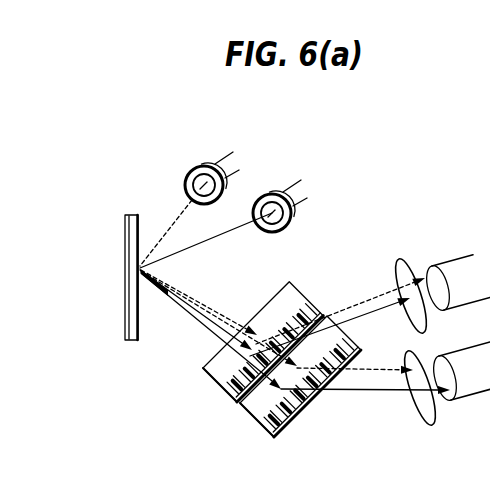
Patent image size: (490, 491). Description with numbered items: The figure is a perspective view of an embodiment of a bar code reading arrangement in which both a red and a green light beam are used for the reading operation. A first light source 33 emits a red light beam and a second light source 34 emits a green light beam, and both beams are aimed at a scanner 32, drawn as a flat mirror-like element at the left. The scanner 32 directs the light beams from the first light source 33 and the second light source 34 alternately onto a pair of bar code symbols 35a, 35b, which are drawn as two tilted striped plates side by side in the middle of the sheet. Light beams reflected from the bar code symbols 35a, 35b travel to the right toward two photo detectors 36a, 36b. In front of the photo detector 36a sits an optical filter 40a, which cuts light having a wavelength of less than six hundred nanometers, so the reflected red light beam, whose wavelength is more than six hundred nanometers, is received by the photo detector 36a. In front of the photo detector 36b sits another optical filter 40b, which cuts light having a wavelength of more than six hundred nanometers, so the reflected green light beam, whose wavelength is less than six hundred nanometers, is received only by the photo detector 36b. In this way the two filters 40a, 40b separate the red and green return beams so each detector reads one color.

The scanner 32 is at (123, 247).
The first light source 33 is at (232, 162).
The second light source 34 is at (303, 183).
The bar code symbol 35a is at (297, 289).
The bar code symbol 35b is at (255, 422).
The optical filter 40a is at (400, 263).
The optical filter 40b is at (418, 417).
The photo detector 36a is at (463, 253).
The photo detector 36b is at (470, 399).